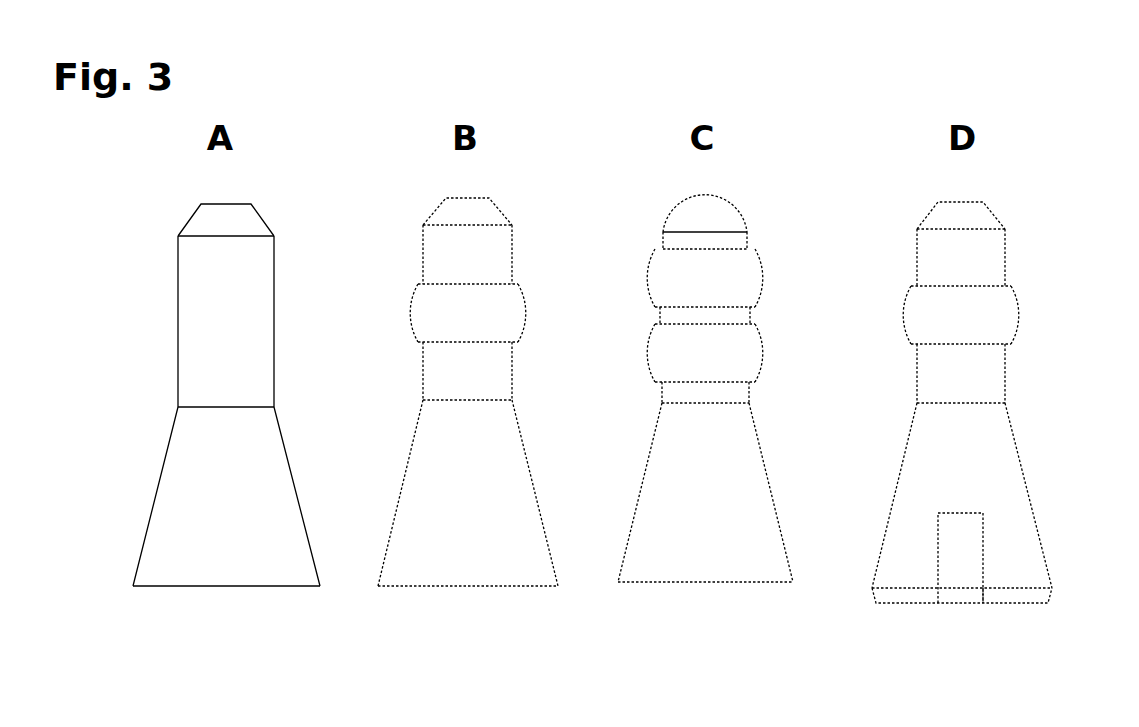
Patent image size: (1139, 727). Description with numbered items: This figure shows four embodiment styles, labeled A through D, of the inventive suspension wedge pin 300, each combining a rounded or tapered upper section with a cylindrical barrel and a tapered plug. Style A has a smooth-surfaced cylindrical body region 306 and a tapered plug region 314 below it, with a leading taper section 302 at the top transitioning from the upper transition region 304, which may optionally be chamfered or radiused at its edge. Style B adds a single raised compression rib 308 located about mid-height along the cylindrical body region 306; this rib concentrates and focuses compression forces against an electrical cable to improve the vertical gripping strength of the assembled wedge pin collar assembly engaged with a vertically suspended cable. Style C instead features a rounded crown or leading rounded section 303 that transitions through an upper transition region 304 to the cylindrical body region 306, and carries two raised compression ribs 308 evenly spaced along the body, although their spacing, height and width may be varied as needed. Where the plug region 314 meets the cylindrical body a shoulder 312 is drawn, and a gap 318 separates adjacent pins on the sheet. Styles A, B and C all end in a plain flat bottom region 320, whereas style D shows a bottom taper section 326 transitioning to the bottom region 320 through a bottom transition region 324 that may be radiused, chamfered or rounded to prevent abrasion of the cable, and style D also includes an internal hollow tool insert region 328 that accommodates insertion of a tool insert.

The wedge pin 300 is at (583, 149).
The leading taper section 302 is at (468, 213).
The leading rounded section 303 is at (703, 214).
The upper transition region 304 is at (460, 234).
The cylindrical body region 306 is at (453, 382).
The raised compression rib 308 is at (687, 355).
The shoulder 312 is at (469, 408).
The tapered plug region 314 is at (468, 496).
The gap 318 is at (378, 586).
The bottom region 320 is at (478, 594).
The bottom transition region 324 is at (1001, 578).
The bottom taper section 326 is at (1023, 603).
The tool insert region 328 is at (960, 558).